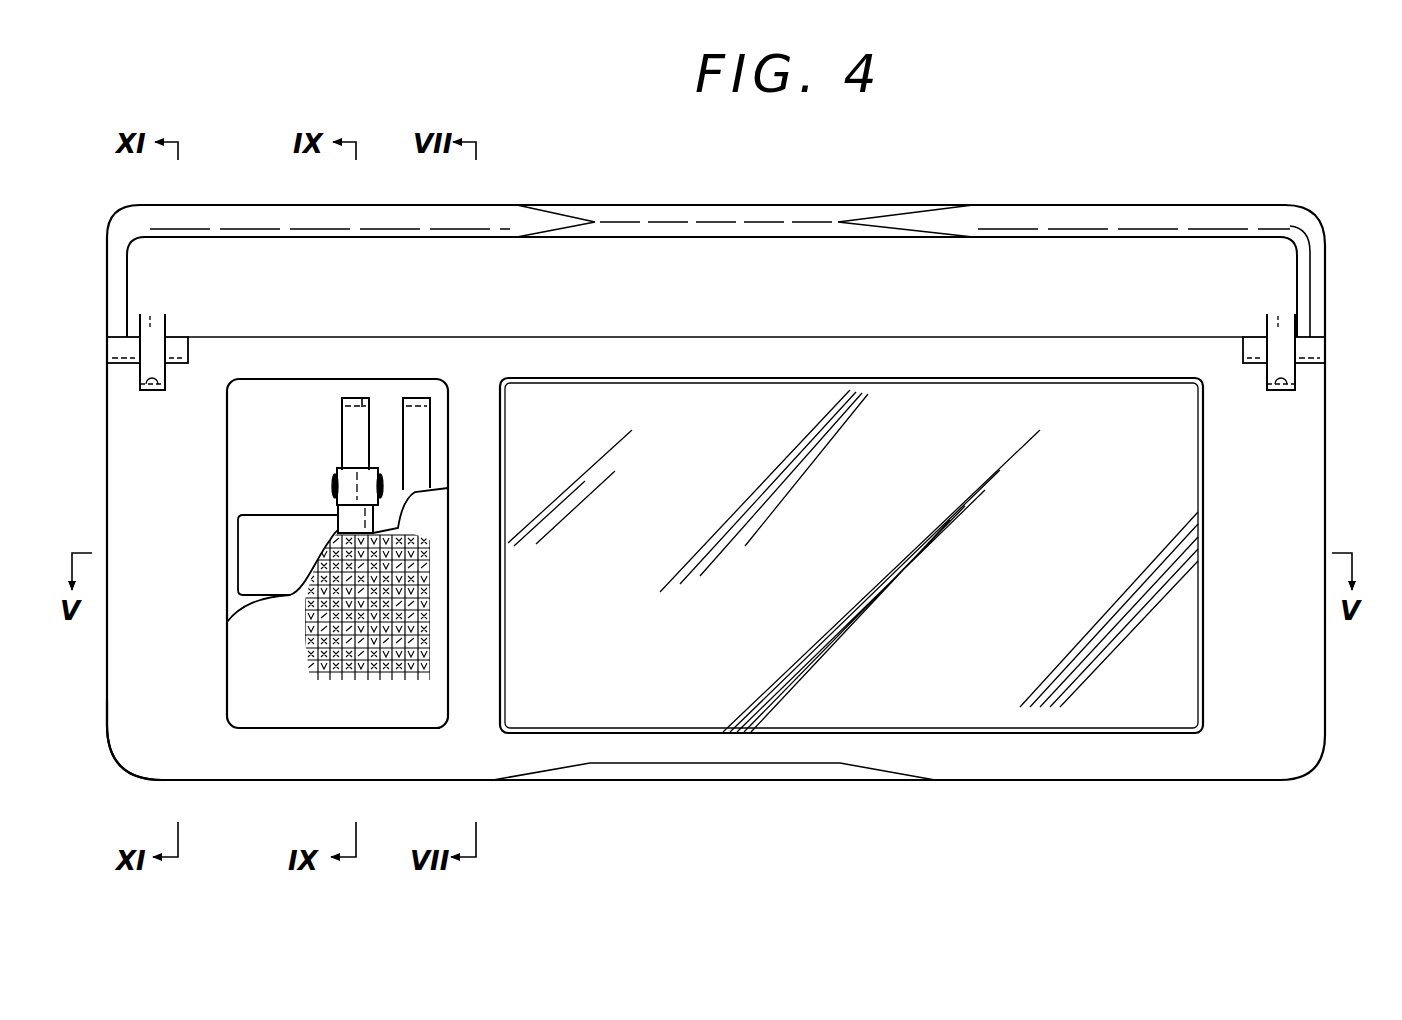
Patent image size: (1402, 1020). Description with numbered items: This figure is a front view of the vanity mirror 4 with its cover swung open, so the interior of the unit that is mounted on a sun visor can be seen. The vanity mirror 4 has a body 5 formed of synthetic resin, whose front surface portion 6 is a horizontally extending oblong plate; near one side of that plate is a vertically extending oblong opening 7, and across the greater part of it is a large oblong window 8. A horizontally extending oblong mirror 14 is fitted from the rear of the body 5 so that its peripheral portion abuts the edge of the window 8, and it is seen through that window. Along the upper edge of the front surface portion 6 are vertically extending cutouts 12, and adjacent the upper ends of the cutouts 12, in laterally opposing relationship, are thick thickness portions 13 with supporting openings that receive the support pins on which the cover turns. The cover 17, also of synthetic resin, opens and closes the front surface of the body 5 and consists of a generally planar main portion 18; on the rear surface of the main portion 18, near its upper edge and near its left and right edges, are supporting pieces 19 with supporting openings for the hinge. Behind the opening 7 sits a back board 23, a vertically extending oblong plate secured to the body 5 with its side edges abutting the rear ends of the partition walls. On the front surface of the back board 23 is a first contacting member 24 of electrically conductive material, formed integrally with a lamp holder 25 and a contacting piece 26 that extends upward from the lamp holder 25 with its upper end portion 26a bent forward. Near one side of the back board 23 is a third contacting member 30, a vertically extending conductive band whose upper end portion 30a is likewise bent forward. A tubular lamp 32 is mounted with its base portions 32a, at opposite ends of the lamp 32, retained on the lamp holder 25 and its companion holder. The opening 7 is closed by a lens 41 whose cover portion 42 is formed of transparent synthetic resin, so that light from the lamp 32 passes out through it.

The vanity mirror 4 is at (240, 188).
The body 5 is at (180, 762).
The front surface portion 6 is at (1280, 701).
The opening 7 is at (267, 728).
The window 8 is at (997, 390).
The cutout 12 is at (155, 390).
The thick thickness portion 13 is at (120, 366).
The mirror 14 is at (983, 716).
The cover 17 is at (1027, 207).
The main portion 18 is at (1138, 207).
The supporting piece 19 is at (167, 327).
The back board 23 is at (245, 494).
The first contacting member 24 is at (342, 430).
The lamp holder 25 is at (380, 486).
The contacting piece 26 is at (342, 400).
The upper end portion 26a is at (371, 400).
The third contacting member 30 is at (422, 430).
The upper end portion 30a is at (430, 397).
The tubular lamp 32 is at (337, 528).
The base portion 32a is at (348, 476).
The lens 41 is at (232, 718).
The cover portion 42 is at (232, 660).